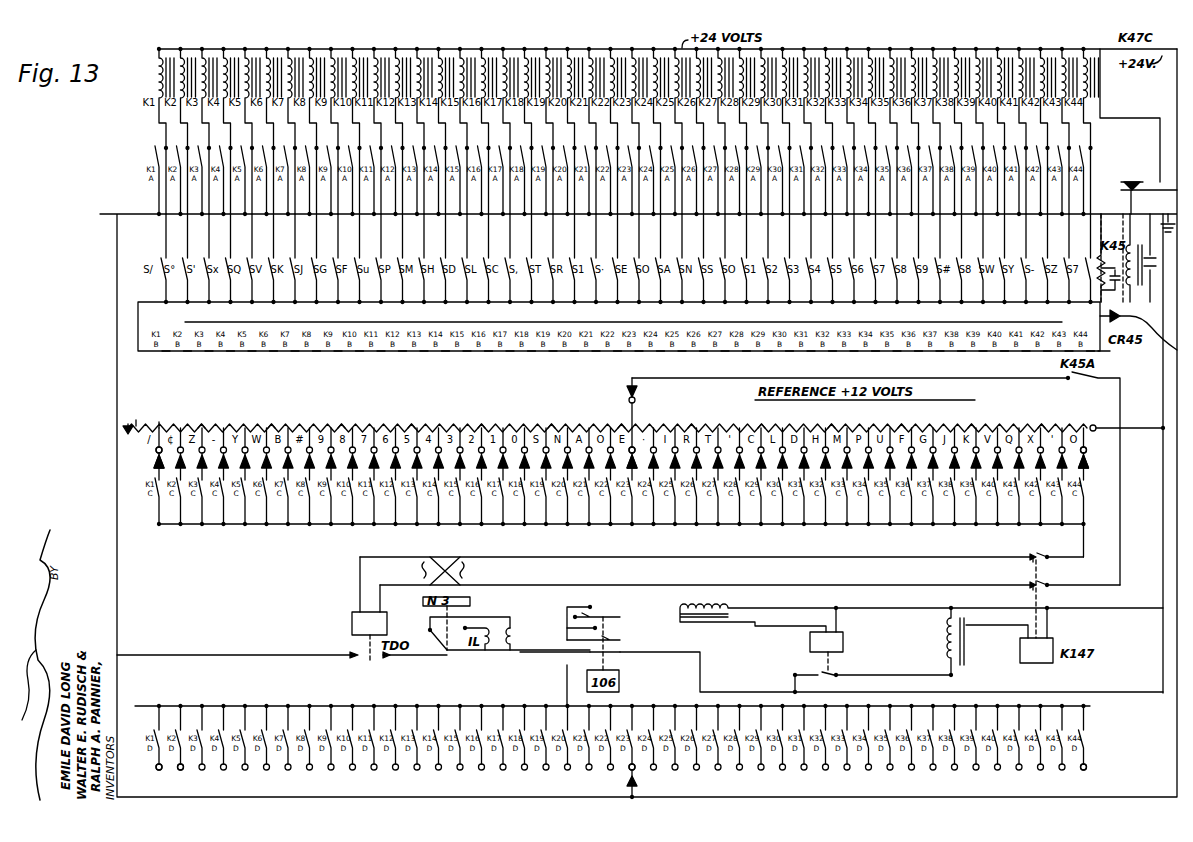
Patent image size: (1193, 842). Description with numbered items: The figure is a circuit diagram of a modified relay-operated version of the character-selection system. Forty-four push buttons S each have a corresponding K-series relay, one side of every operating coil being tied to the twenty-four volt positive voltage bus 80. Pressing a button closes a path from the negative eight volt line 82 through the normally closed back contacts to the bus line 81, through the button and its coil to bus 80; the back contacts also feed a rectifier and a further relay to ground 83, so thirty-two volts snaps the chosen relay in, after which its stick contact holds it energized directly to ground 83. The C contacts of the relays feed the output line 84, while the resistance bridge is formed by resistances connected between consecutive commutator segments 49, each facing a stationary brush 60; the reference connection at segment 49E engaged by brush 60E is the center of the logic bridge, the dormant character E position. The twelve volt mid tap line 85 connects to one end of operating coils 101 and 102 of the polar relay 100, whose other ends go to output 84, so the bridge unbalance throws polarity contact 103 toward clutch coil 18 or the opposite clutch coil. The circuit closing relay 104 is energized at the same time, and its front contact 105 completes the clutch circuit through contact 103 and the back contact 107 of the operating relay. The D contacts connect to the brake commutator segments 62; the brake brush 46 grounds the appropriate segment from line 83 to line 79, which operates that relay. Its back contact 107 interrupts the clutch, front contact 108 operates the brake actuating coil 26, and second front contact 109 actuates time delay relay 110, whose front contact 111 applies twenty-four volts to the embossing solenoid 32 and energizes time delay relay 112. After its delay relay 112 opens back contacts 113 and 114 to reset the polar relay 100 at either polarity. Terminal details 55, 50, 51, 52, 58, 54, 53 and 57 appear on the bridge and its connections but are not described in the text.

The positive voltage bus 80 is at (159, 49).
The ground 83 is at (116, 291).
The bus line 81 is at (138, 326).
The resistor end terminal 55 is at (128, 424).
The terminal 50 is at (136, 426).
The terminal 51 is at (164, 428).
The voltage divider resistor 52 is at (202, 422).
The commutator segment 49 is at (156, 450).
The brush 60 is at (158, 462).
The output line 84 is at (159, 524).
The reference input arrow 58 is at (630, 390).
The reference tap terminal 54 is at (636, 400).
The commutator segment E 49E is at (630, 448).
The brush E 60E is at (636, 462).
The twelve volt mid tap line 85 is at (1120, 388).
The negative eight volt line 82 is at (1162, 416).
The resistor end terminal 53 is at (1092, 426).
The connection line 57 is at (1098, 430).
The polar relay 100 is at (454, 558).
The operating coil 101 is at (426, 574).
The operating coil 102 is at (458, 574).
The back contact 113 is at (1034, 556).
The back contact 114 is at (1034, 584).
The circuit closing relay 104 is at (369, 596).
The front contact 105 is at (362, 661).
The polarity contact 103 is at (470, 647).
The clutch actuating coil 18 is at (524, 636).
The back contact 107 is at (590, 652).
The front contact 108 is at (620, 620).
The second front contact 109 is at (640, 638).
The brake actuating coil 26 is at (680, 608).
The time delay relay 110 is at (826, 630).
The front contact 111 is at (832, 672).
The embossing solenoid 32 is at (950, 642).
The time delay relay 112 is at (1036, 635).
The line 79 is at (140, 706).
The brake commutator segment 62 is at (178, 766).
The brake brush 46 is at (638, 778).